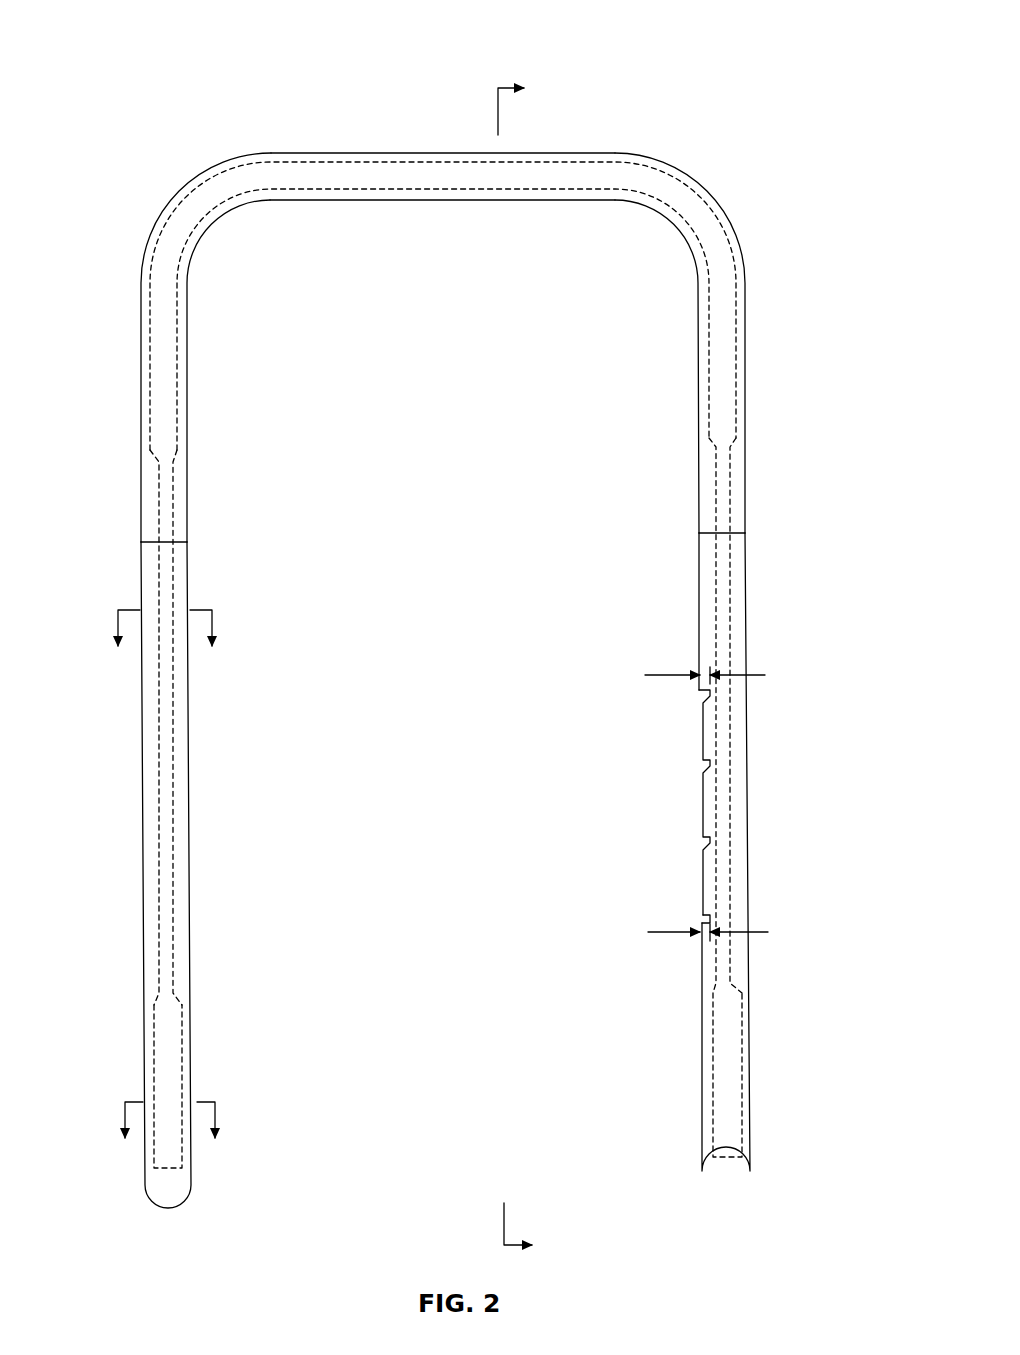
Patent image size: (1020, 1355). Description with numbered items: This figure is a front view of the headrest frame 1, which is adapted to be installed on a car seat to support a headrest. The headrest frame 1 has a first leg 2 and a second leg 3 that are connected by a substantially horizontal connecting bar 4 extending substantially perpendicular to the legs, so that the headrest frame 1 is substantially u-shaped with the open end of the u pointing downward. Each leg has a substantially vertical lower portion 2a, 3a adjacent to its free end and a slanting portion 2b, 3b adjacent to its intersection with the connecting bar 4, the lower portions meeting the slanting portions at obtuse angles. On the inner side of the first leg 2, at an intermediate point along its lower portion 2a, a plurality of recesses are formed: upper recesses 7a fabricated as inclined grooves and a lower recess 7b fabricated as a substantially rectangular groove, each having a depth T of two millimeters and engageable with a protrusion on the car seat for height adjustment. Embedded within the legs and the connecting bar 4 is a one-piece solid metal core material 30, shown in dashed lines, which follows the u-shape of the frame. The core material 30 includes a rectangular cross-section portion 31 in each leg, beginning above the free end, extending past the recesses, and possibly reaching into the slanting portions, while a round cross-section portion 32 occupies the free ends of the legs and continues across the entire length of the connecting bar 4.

The headrest frame 1 is at (768, 157).
The first leg 2 is at (747, 566).
The substantially vertical lower portion of the first leg 2a is at (748, 822).
The slanting portion of the first leg 2b is at (746, 325).
The second leg 3 is at (142, 577).
The substantially vertical lower portion of the second leg 3a is at (142, 830).
The slanting portion of the second leg 3b is at (141, 335).
The connecting bar 4 is at (423, 153).
The upper recesses 7a is at (701, 697).
The lower recess 7b is at (703, 915).
The core material 30 is at (652, 163).
The rectangular cross-section portion 31 is at (176, 690).
The round cross-section portion 32 is at (188, 360).
The depth of the recesses T is at (694, 804).